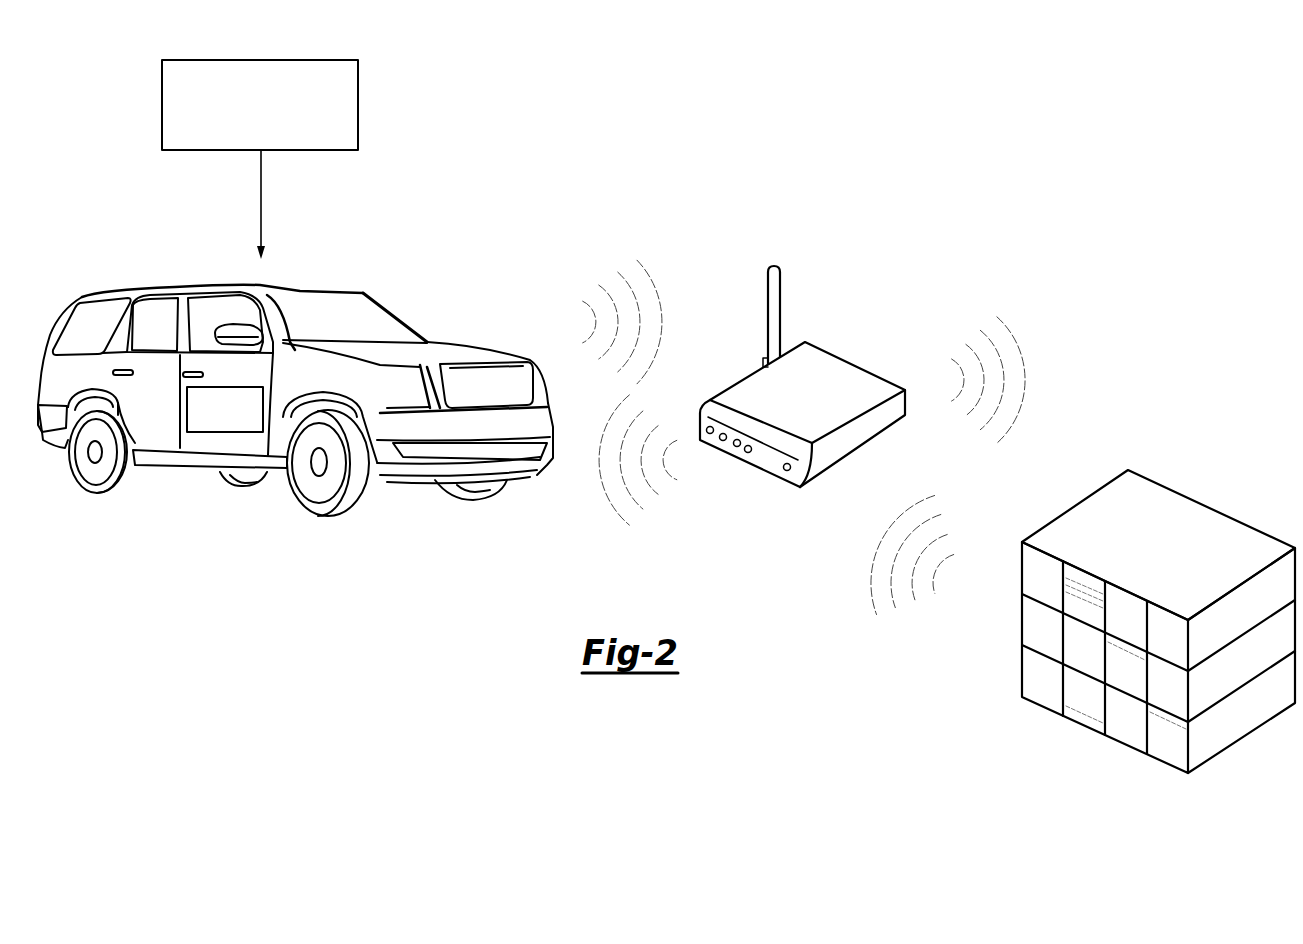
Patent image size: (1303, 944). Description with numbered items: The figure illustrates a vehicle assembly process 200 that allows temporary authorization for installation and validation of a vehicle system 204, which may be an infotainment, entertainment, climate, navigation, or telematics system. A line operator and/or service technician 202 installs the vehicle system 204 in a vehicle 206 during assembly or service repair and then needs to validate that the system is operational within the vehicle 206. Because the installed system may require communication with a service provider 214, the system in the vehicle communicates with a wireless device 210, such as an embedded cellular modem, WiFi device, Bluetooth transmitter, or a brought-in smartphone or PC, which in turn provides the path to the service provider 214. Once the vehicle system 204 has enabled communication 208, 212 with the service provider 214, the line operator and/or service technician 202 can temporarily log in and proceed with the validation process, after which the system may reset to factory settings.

The vehicle assembly process 200 is at (582, 82).
The line operator and/or service technician 202 is at (162, 102).
The vehicle system 204 is at (187, 410).
The vehicle 206 is at (168, 282).
The communication 208 is at (589, 269).
The wireless device 210 is at (859, 338).
The communication 212 is at (866, 552).
The service provider 214 is at (1216, 482).